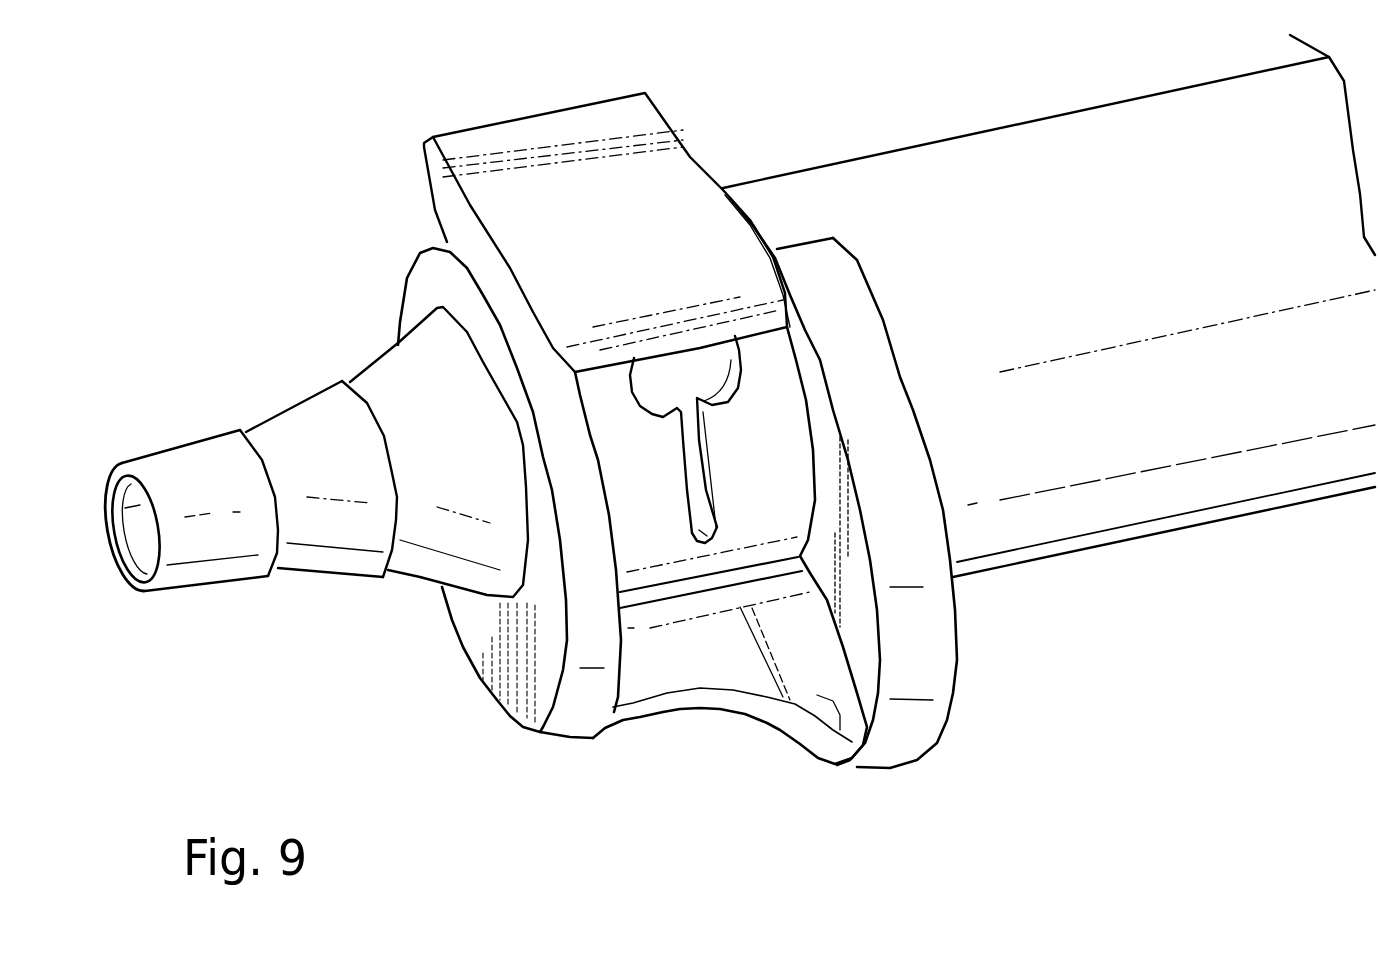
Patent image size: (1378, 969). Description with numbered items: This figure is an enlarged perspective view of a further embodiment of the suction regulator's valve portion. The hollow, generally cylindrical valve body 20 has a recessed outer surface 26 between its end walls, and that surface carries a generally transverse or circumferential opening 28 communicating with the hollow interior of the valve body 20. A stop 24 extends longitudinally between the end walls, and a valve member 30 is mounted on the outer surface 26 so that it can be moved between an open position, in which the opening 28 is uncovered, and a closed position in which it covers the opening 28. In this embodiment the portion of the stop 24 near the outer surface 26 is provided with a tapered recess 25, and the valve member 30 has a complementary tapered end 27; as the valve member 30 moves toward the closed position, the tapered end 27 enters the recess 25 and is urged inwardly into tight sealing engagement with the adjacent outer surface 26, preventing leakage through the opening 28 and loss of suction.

The valve body 20 is at (732, 678).
The stop 24 is at (815, 757).
The tapered recess 25 is at (680, 597).
The outer surface 26 is at (637, 555).
The tapered end 27 is at (775, 313).
The opening 28 is at (695, 468).
The valve member 30 is at (634, 219).